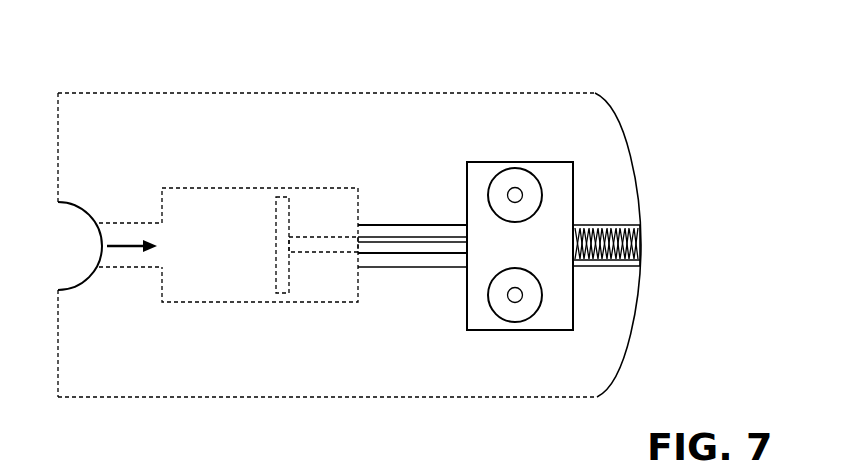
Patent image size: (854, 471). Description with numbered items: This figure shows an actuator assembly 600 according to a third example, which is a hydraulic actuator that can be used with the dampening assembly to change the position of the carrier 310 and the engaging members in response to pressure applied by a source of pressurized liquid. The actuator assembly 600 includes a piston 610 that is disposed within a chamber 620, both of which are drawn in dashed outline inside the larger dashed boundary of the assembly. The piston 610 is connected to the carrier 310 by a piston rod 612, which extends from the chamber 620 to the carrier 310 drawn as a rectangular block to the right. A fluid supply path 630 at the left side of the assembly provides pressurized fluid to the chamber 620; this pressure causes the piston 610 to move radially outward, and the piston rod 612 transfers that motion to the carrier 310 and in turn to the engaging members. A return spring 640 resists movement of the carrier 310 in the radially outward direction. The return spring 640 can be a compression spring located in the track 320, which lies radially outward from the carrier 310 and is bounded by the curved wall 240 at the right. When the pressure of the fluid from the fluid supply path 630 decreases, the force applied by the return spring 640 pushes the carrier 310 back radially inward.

The actuator assembly 600 is at (192, 113).
The fluid supply path 630 is at (110, 222).
The chamber 620 is at (313, 187).
The piston 610 is at (281, 196).
The piston rod 612 is at (322, 240).
The carrier 310 is at (538, 162).
The track 320 is at (608, 223).
The housing wall 240 is at (625, 122).
The return spring 640 is at (623, 267).